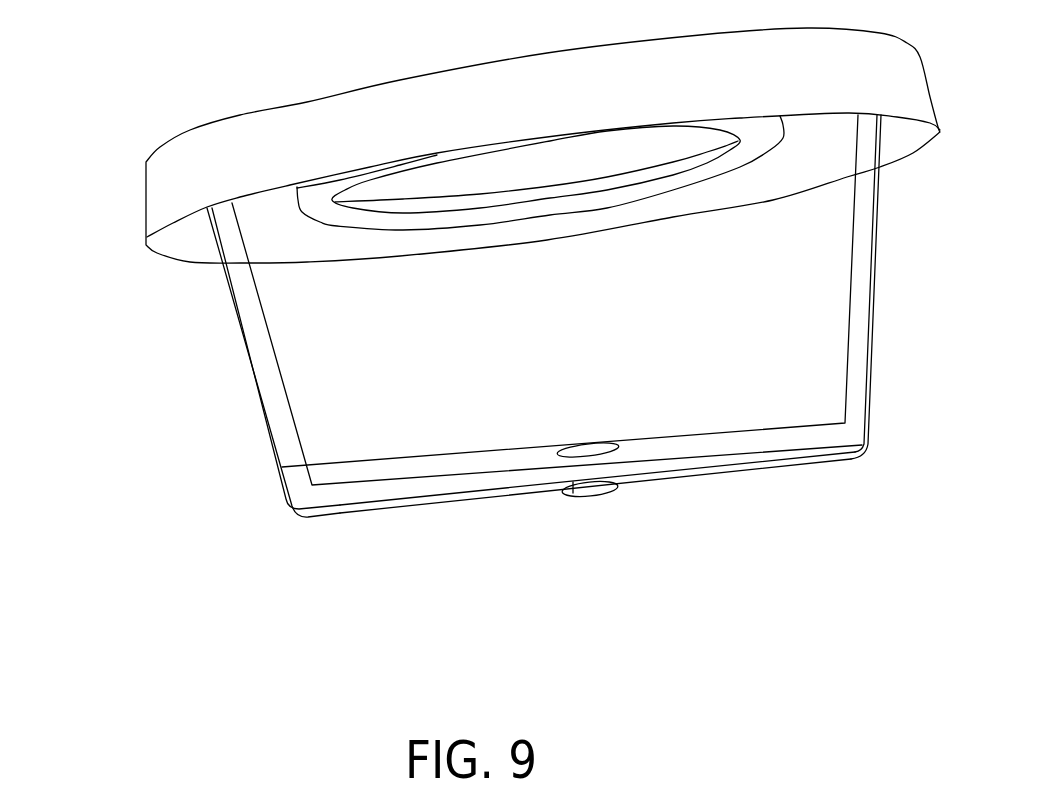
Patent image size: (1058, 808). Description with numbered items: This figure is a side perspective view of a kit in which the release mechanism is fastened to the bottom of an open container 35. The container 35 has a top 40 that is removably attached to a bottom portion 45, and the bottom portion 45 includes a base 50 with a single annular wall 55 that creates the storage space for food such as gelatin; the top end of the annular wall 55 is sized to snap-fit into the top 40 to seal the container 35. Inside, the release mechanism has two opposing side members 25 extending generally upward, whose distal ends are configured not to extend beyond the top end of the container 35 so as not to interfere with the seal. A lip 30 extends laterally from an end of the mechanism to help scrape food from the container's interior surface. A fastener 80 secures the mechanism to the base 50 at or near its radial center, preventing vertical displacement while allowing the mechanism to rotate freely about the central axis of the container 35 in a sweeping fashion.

The storage container 35 is at (113, 122).
The top 40 is at (470, 93).
The side members 25 is at (862, 268).
The bottom portion 45 is at (283, 546).
The base 50 is at (798, 463).
The annular wall 55 is at (880, 303).
The fastener 80 is at (597, 448).
The lip 30 is at (604, 488).